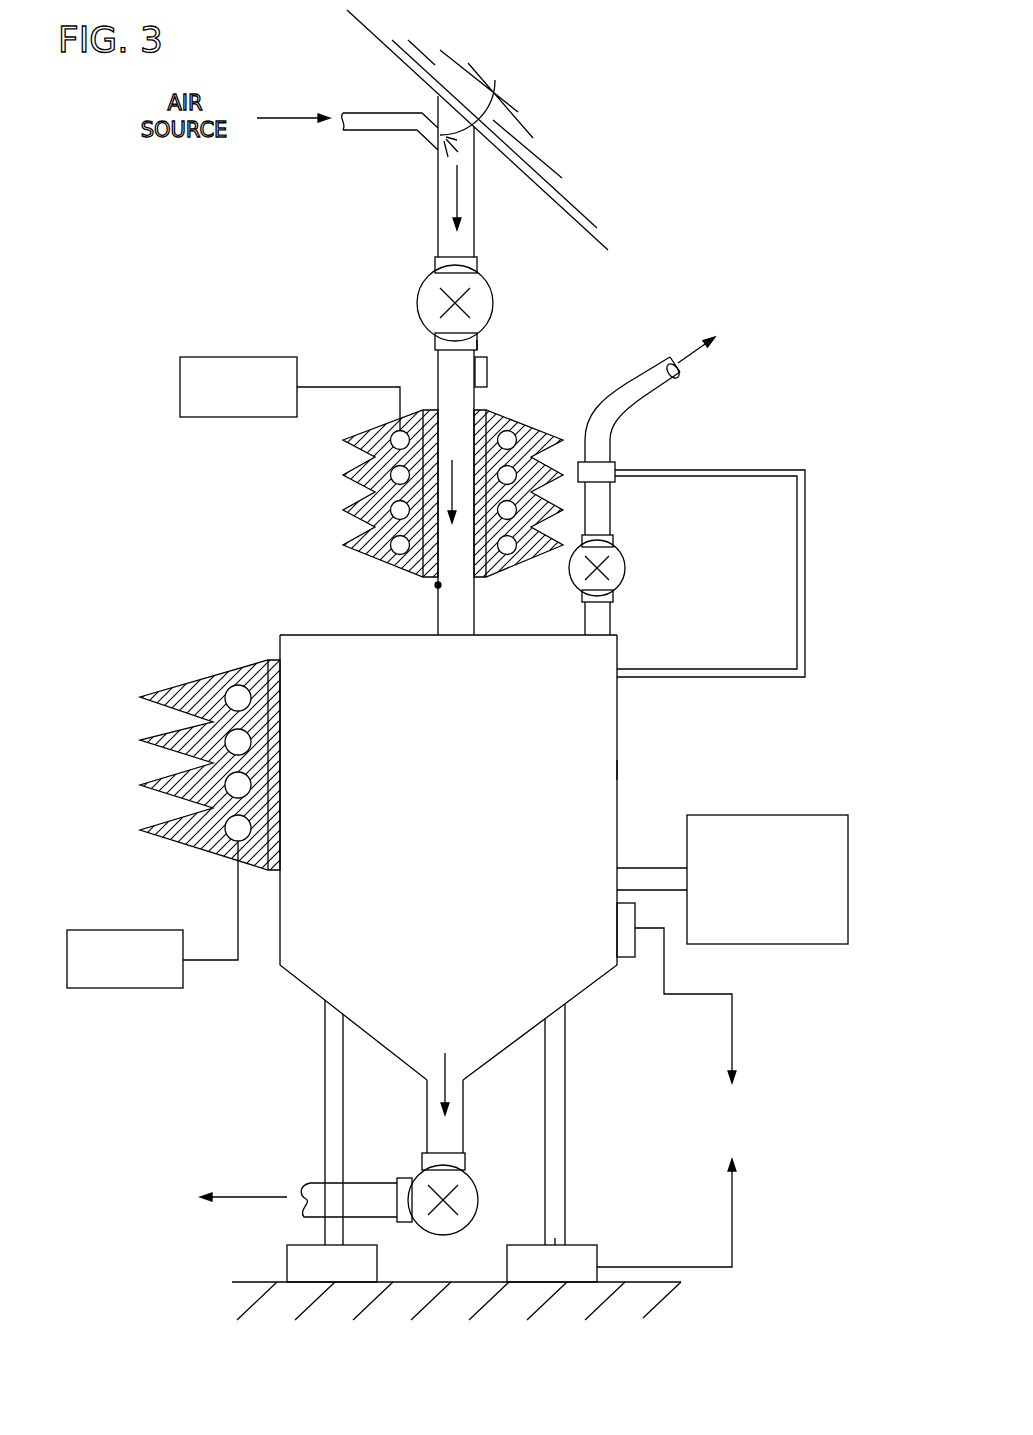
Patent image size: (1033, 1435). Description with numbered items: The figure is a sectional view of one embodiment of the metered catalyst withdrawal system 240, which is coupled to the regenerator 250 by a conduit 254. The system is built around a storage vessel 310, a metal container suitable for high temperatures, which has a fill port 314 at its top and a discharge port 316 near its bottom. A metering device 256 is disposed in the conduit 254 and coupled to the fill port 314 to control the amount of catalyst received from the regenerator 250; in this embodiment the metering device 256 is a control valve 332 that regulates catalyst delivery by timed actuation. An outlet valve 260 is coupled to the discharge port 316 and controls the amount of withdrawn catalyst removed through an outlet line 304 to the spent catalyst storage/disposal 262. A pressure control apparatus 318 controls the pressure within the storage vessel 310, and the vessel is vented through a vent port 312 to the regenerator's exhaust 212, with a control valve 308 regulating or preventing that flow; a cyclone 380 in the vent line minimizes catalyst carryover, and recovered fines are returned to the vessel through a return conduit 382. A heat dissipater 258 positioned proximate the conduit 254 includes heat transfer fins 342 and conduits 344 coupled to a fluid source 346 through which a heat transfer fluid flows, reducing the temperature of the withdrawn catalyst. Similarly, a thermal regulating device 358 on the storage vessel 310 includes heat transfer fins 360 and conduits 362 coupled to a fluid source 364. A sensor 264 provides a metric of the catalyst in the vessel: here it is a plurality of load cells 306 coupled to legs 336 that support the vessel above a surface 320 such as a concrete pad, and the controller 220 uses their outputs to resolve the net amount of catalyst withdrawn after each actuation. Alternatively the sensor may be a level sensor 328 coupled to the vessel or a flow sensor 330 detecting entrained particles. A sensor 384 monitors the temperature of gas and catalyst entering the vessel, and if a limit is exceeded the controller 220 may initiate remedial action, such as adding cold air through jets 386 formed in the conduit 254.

The exhaust 212 is at (767, 345).
The controller 220 is at (487, 368).
The metered catalyst withdrawal system 240 is at (432, 778).
The regenerator 250 is at (533, 181).
The conduit 254 is at (438, 200).
The metering device 256 is at (490, 290).
The heat dissipater 258 is at (312, 452).
The outlet valve 260 is at (489, 1167).
The spent catalyst storage/disposal 262 is at (180, 1195).
The sensor 264 is at (572, 1225).
The outlet line 304 is at (317, 1180).
The load cells 306 is at (300, 1243).
The control valve 308 is at (622, 558).
The storage vessel 310 is at (620, 770).
The vent port 312 is at (612, 622).
The fill port 314 is at (430, 633).
The discharge port 316 is at (463, 1080).
The pressure control apparatus 318 is at (732, 879).
The surface 320 is at (588, 1243).
The level sensor 328 is at (615, 915).
The flow sensor 330 is at (487, 377).
The control valve 332 is at (404, 288).
The legs 336 is at (325, 1030).
The heat transfer fins 342 is at (344, 478).
The conduits 344 is at (392, 428).
The fluid source 346 is at (221, 400).
The thermal regulating device 358 is at (92, 644).
The heat transfer fins 360 is at (105, 730).
The conduits 362 is at (235, 683).
The fluid source 364 is at (108, 973).
The cyclone 380 is at (615, 458).
The return conduit 382 is at (805, 548).
The sensor 384 is at (440, 588).
The jets 386 is at (495, 80).